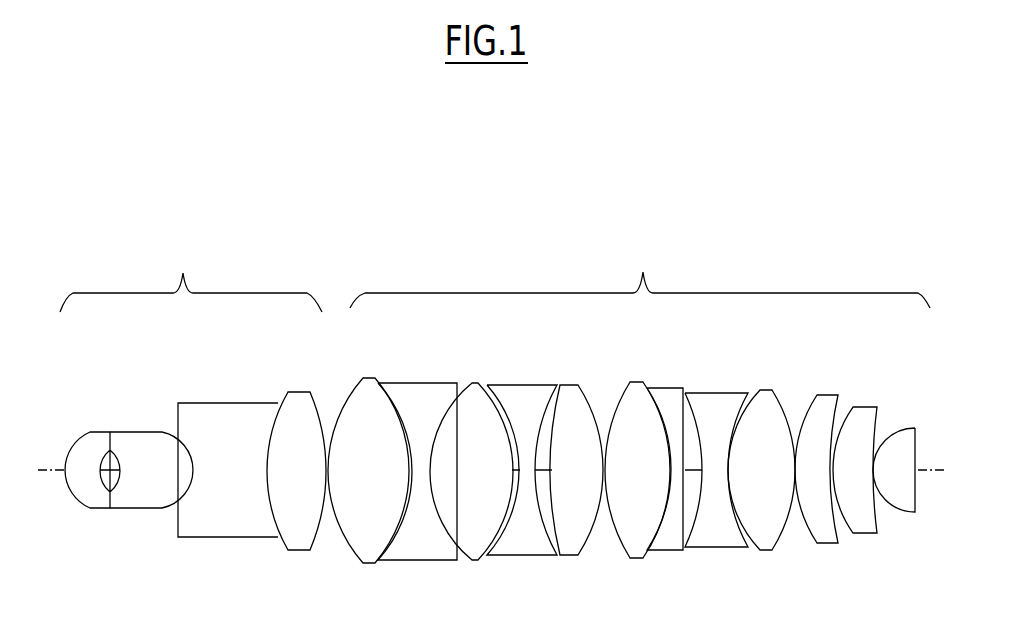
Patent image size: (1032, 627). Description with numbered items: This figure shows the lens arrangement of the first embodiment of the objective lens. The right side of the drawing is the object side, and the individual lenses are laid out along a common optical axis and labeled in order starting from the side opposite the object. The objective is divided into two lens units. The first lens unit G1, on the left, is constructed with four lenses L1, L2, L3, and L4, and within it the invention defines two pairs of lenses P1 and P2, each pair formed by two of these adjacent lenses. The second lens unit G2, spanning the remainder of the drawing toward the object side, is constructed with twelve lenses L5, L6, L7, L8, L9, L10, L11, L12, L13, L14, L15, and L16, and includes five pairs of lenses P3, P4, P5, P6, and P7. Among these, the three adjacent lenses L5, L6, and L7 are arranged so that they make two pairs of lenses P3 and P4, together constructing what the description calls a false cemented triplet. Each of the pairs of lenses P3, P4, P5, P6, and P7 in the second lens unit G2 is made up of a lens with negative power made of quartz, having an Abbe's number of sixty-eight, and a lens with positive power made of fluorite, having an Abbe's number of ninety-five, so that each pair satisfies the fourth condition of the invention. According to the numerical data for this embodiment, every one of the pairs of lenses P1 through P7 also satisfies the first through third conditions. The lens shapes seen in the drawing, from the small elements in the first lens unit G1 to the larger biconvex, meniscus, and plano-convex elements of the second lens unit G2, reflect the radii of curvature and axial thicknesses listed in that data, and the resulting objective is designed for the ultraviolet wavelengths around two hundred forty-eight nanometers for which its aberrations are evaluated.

The first lens unit G1 is at (191, 277).
The second lens unit G2 is at (640, 275).
The lens L1 is at (92, 432).
The lens L2 is at (145, 432).
The lens L3 is at (228, 408).
The lens L4 is at (302, 397).
The lens L5 is at (363, 390).
The lens L6 is at (418, 390).
The lens L7 is at (473, 397).
The lens L8 is at (523, 392).
The lens L9 is at (568, 388).
The lens L10 is at (632, 398).
The lens L11 is at (670, 395).
The lens L12 is at (718, 403).
The lens L13 is at (770, 403).
The lens L14 is at (830, 410).
The lens L15 is at (863, 417).
The lens L16 is at (902, 440).
The pair of lenses P1 is at (177, 533).
The pair of lenses P2 is at (276, 533).
The pair of lenses P3 is at (389, 533).
The pair of lenses P4 is at (451, 533).
The pair of lenses P5 is at (503, 533).
The pair of lenses P6 is at (651, 533).
The pair of lenses P7 is at (742, 533).